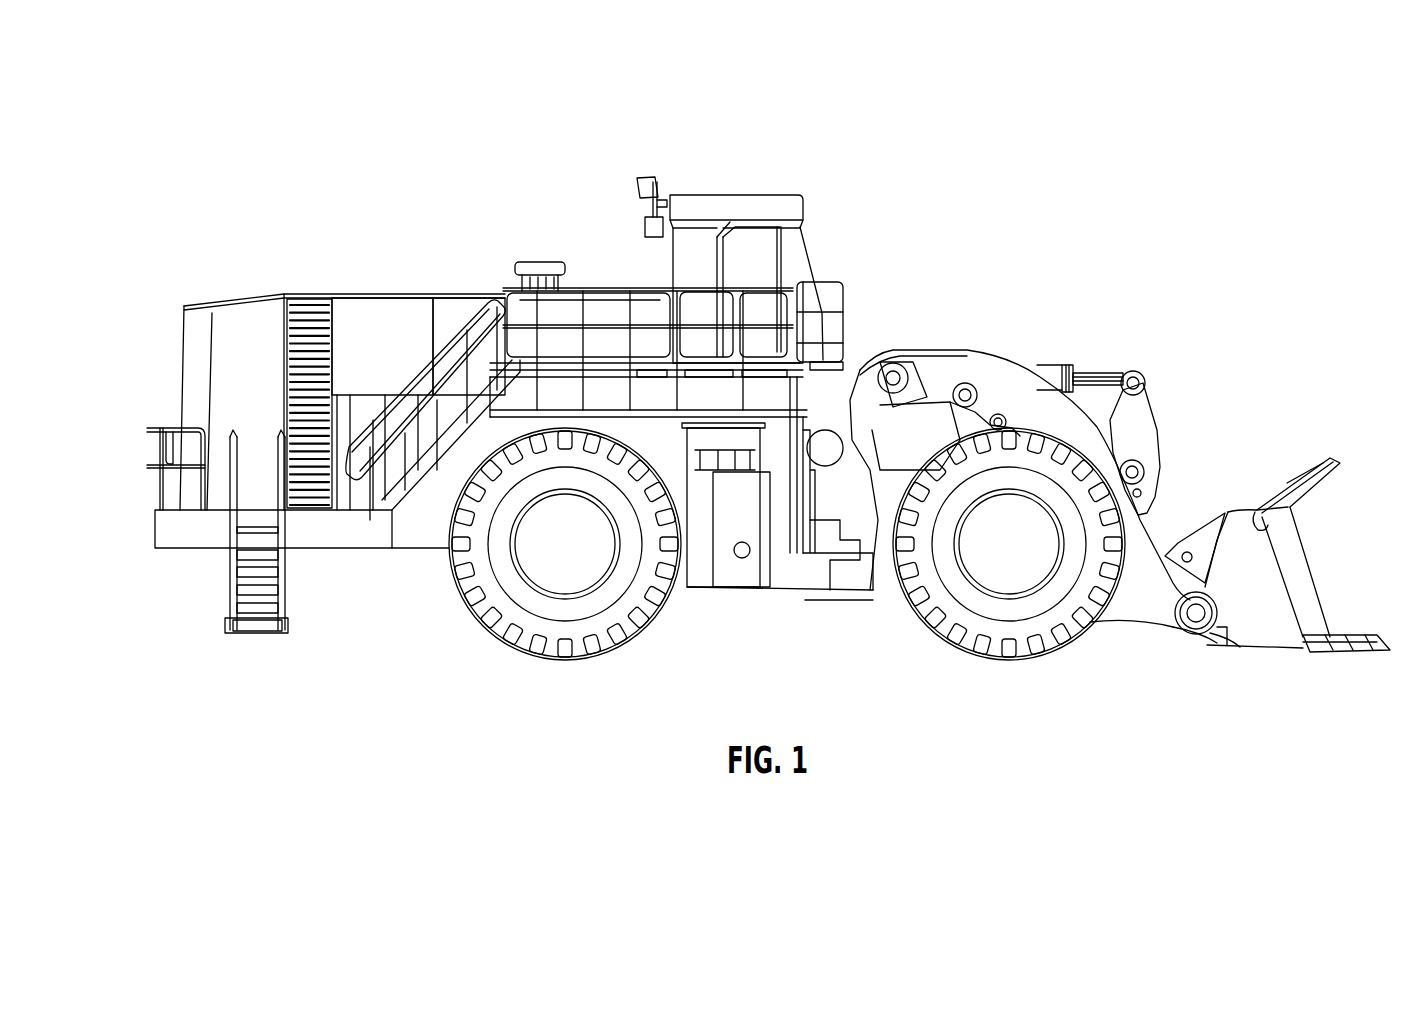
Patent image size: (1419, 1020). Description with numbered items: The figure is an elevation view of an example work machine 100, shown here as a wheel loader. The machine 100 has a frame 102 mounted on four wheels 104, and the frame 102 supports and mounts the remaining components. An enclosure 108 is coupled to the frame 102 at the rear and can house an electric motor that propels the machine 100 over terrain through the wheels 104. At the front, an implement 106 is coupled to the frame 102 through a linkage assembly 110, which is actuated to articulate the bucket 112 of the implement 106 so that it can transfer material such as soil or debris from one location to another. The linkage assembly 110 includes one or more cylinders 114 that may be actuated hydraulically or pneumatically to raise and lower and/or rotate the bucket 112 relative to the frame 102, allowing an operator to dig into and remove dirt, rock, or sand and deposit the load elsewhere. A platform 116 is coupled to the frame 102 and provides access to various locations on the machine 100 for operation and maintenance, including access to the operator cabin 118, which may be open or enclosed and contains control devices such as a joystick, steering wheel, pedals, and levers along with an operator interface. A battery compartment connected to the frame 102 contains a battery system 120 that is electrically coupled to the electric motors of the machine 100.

The machine 100 is at (500, 128).
The frame 102 is at (192, 543).
The wheels 104 is at (523, 652).
The implement 106 is at (1190, 350).
The enclosure 108 is at (252, 294).
The linkage assembly 110 is at (1147, 437).
The bucket 112 is at (1287, 640).
The cylinders 114 is at (1043, 363).
The platform 116 is at (653, 367).
The operator cabin 118 is at (803, 207).
The battery system 120 is at (742, 578).